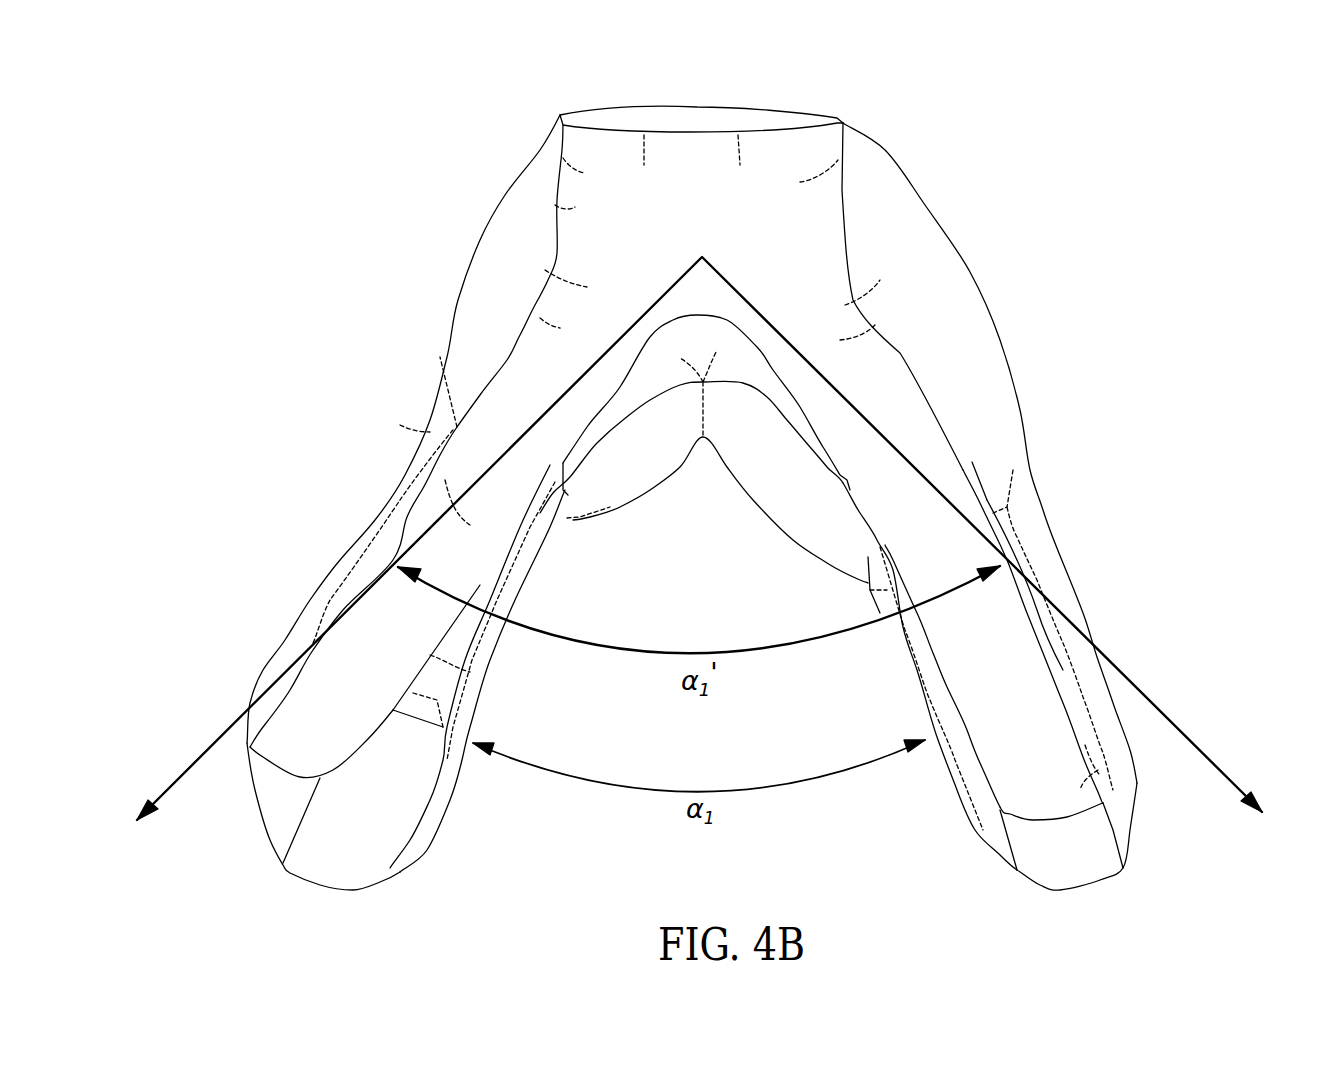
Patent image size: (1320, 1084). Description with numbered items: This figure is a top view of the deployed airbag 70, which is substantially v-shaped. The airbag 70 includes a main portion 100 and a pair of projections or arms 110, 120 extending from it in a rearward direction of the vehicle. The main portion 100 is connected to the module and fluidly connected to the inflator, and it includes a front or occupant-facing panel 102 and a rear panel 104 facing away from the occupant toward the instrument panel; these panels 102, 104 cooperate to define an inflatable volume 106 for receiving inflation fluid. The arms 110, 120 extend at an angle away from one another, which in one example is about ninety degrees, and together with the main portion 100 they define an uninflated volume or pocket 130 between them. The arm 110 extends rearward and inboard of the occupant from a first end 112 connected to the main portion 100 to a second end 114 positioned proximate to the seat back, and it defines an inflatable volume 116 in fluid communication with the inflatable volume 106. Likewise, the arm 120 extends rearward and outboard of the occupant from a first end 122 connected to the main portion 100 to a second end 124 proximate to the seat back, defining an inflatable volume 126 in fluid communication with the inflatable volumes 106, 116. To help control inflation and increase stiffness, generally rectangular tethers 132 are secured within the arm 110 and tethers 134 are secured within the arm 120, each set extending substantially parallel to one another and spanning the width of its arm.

The airbag 70 is at (880, 75).
The main portion 100 is at (727, 137).
The front panel 102 is at (650, 490).
The rear panel 104 is at (656, 107).
The inflatable volume 106 is at (810, 238).
The arm 110 is at (407, 517).
The first end 112 is at (415, 320).
The second end 114 is at (245, 828).
The inflatable volume 116 is at (381, 598).
The arm 120 is at (1030, 617).
The first end 122 is at (1012, 273).
The second end 124 is at (1148, 860).
The inflatable volume 126 is at (1080, 710).
The pocket 130 is at (560, 860).
The tethers 132 is at (455, 685).
The tethers 134 is at (1067, 645).